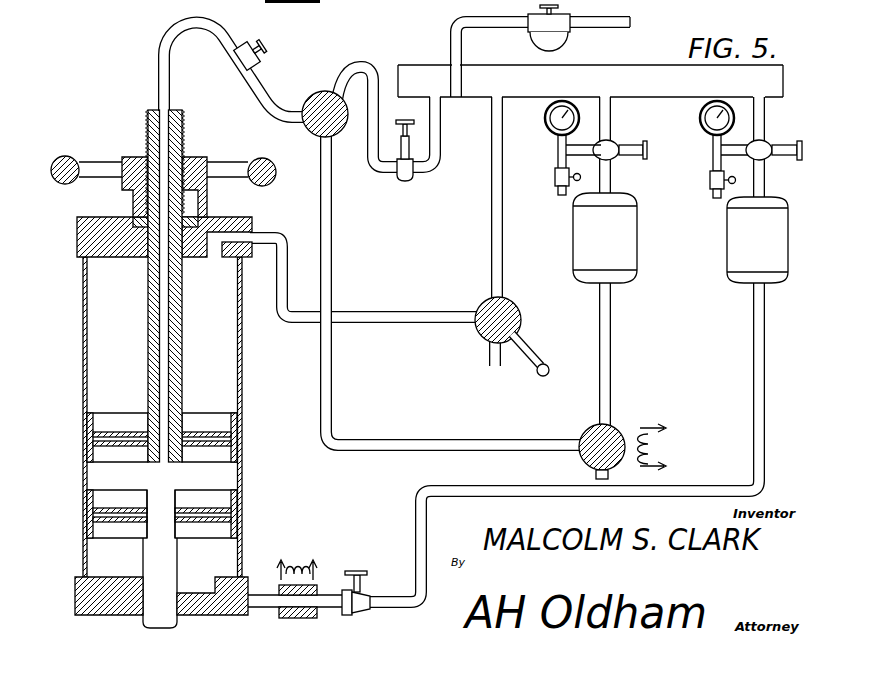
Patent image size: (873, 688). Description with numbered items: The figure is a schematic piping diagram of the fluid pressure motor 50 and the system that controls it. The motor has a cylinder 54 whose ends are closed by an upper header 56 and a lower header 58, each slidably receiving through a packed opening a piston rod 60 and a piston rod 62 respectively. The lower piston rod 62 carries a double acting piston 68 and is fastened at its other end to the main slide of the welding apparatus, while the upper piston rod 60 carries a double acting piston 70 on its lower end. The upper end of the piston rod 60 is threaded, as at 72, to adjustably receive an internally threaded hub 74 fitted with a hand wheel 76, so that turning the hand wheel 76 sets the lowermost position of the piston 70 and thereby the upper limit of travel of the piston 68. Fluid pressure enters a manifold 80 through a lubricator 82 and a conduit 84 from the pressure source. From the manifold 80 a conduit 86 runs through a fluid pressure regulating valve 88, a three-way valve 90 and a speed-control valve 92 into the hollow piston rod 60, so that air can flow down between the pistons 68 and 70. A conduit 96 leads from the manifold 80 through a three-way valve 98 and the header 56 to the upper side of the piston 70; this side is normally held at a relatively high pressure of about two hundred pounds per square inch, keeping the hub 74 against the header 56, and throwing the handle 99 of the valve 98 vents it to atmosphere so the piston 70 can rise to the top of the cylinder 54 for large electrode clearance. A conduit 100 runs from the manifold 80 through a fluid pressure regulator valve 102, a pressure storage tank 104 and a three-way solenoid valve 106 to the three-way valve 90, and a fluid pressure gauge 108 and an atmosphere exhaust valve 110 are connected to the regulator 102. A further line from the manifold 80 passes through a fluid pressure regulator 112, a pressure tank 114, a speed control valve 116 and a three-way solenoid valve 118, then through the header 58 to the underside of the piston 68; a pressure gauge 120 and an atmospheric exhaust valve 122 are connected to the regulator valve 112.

The fluid pressure motor 50 is at (78, 375).
The cylinder 54 is at (85, 395).
The header 56 is at (84, 240).
The header 58 is at (78, 578).
The piston rod 60 is at (148, 295).
The piston rod 62 is at (147, 556).
The piston 68 is at (240, 495).
The piston 70 is at (240, 428).
The threaded upper end of piston rod 72 is at (148, 112).
The internally threaded hub 74 is at (127, 157).
The hand wheel 76 is at (273, 180).
The manifold 80 is at (630, 58).
The lubricator 82 is at (538, 16).
The conduit 84 is at (612, 26).
The conduit 86 is at (430, 173).
The fluid pressure regulating valve 88 is at (402, 180).
The three-way valve 90 is at (315, 93).
The speed-control valve 92 is at (248, 44).
The conduit 96 is at (492, 226).
The three-way valve 98 is at (483, 304).
The handle 99 is at (530, 348).
The conduit 100 is at (610, 126).
The fluid pressure regulator valve 102 is at (614, 153).
The pressure storage tank 104 is at (622, 244).
The three-way solenoid valve 106 is at (608, 428).
The fluid pressure gauge 108 is at (555, 125).
The atmosphere exhaust valve 110 is at (555, 178).
The fluid pressure regulator 112 is at (765, 153).
The pressure tank 114 is at (727, 250).
The speed control valve 116 is at (368, 596).
The three-way solenoid valve 118 is at (296, 572).
The pressure gauge 120 is at (707, 124).
The atmospheric exhaust valve 122 is at (710, 178).